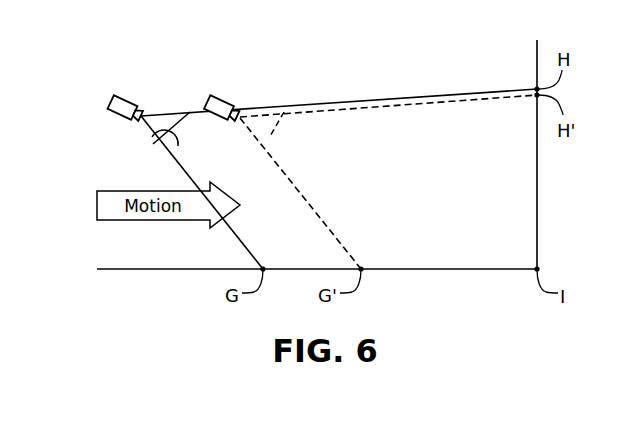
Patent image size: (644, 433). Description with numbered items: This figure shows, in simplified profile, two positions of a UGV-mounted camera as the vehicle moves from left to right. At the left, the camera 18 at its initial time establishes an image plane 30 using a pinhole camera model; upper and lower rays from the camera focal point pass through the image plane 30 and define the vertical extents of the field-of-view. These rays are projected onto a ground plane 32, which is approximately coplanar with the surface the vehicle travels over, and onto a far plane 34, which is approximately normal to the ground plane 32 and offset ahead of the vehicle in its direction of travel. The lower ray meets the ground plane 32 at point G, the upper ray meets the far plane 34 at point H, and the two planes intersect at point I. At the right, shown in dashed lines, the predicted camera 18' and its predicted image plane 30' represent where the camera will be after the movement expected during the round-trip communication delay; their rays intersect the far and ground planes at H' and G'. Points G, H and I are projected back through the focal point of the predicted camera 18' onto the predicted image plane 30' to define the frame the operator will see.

The camera 18 is at (99, 125).
The camera (predicted position) 18' is at (235, 77).
The image plane 30 is at (143, 143).
The predicted image plane 30' is at (311, 138).
The ground plane 32 is at (412, 270).
The far plane 34 is at (537, 232).